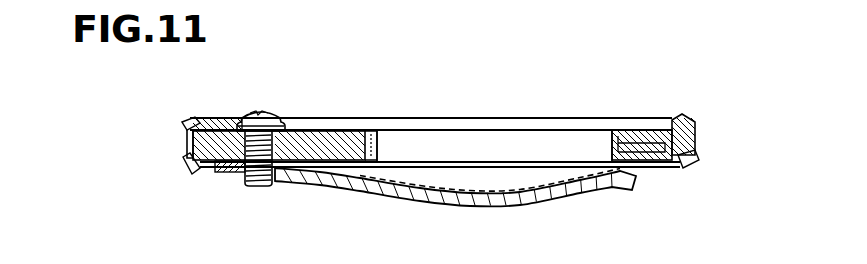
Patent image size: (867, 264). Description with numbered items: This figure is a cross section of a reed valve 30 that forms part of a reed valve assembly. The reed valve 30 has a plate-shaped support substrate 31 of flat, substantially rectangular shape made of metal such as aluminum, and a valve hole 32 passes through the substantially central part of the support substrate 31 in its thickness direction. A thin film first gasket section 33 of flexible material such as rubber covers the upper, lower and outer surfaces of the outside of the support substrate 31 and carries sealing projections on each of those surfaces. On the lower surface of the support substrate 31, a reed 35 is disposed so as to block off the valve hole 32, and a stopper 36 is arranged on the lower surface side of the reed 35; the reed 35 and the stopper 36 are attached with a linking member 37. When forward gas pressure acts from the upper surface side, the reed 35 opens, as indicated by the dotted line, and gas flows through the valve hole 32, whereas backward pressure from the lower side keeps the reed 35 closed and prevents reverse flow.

The reed valve 30 is at (646, 100).
The support substrate 31 is at (325, 140).
The valve hole 32 is at (558, 140).
The first gasket section 33 is at (182, 122).
The reed 35 is at (458, 162).
The stopper 36 is at (583, 182).
The linking member 37 is at (258, 111).